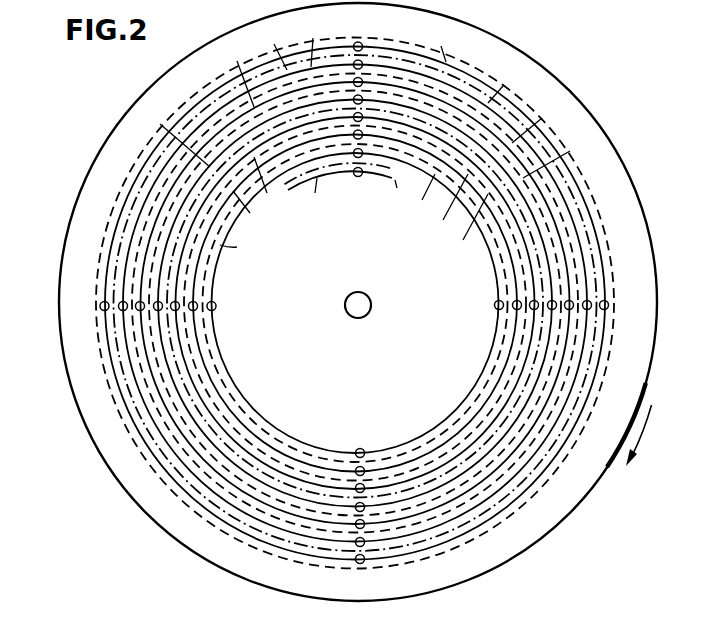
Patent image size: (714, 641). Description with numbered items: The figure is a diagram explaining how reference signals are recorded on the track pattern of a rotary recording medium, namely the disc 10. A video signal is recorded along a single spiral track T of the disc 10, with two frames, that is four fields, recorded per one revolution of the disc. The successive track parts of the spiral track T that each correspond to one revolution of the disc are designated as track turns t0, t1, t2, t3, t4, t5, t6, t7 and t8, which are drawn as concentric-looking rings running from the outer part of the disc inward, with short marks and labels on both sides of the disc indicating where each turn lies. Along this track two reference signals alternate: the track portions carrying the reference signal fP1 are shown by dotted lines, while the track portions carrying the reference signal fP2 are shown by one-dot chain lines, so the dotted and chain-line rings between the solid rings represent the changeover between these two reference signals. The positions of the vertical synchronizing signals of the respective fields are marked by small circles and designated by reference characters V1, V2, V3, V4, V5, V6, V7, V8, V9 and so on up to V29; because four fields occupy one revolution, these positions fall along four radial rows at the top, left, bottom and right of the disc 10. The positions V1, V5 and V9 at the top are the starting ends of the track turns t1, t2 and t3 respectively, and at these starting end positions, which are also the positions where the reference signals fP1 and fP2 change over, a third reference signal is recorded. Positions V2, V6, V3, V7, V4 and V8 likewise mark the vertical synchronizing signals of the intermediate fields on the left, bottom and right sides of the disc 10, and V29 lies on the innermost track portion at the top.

The disc 10 is at (639, 201).
The spiral track T is at (192, 107).
The reference signal fp1 fP1 is at (119, 198).
The reference signal fp2 fP2 is at (118, 222).
The track turn t0 is at (440, 45).
The track turn t1 is at (390, 66).
The track turn t2 is at (432, 80).
The track turn t3 is at (407, 111).
The track turn t4 is at (316, 186).
The track turn t5 is at (361, 198).
The track turn t6 is at (334, 204).
The track turn t7 is at (311, 220).
The track turn t8 is at (315, 196).
The vertical synchronizing signal position V1 is at (363, 45).
The vertical synchronizing signal position V2 is at (100, 306).
The vertical synchronizing signal position V3 is at (355, 558).
The vertical synchronizing signal position V4 is at (609, 304).
The vertical synchronizing signal position V5 is at (364, 64).
The vertical synchronizing signal position V6 is at (120, 310).
The vertical synchronizing signal position V7 is at (355, 541).
The vertical synchronizing signal position V8 is at (591, 309).
The vertical synchronizing signal position V9 is at (364, 81).
The vertical synchronizing signal position V29 is at (359, 178).